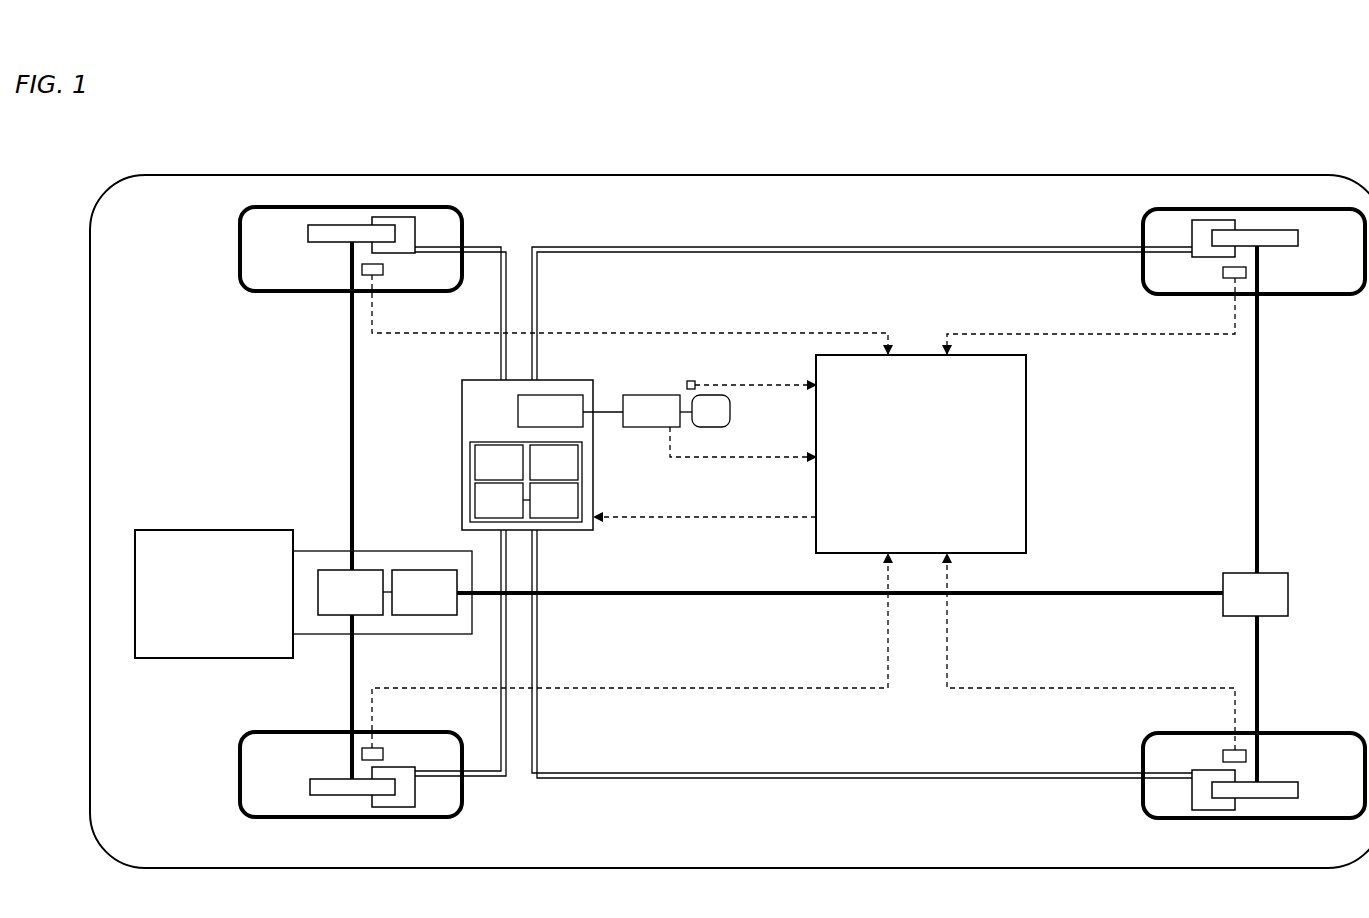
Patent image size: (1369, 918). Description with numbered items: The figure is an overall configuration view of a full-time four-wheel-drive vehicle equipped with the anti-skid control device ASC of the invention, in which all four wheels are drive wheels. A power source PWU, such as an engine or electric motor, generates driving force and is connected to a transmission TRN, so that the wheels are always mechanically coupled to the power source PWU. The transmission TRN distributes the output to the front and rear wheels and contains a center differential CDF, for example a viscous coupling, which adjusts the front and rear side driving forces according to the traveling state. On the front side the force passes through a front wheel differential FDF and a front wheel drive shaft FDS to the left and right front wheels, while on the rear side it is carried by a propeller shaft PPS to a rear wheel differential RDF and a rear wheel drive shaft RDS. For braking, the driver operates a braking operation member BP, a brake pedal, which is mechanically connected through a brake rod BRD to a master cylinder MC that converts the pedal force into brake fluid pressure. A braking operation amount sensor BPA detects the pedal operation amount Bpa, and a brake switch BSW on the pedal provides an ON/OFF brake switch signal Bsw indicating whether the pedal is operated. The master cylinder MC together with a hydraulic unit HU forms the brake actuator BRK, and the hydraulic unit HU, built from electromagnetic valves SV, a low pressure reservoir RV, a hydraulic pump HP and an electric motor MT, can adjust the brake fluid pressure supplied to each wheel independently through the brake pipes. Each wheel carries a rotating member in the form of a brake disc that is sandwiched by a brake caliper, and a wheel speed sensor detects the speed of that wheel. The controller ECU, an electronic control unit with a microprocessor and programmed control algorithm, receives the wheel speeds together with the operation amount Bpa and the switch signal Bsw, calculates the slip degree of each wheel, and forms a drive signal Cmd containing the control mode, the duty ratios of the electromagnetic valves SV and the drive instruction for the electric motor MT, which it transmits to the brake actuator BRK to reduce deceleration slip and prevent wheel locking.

The front wheel drive shaft FDS is at (352, 396).
The rear wheel drive shaft RDS is at (1257, 398).
The propeller shaft PPS is at (1066, 592).
The brake actuator BRK is at (475, 378).
The master cylinder MC is at (570, 411).
The hydraulic unit HU is at (515, 442).
The electromagnetic valve SV is at (499, 462).
The low pressure reservoir RV is at (554, 462).
The hydraulic pump HP is at (502, 500).
The electric motor MT is at (554, 500).
The braking operation amount sensor BPA is at (657, 411).
The braking operation member BP is at (711, 411).
The brake rod BRD is at (597, 415).
The brake switch BSW is at (687, 381).
The brake switch signal Bsw is at (755, 370).
The braking operation amount Bpa is at (743, 442).
The drive signal Cmd is at (705, 501).
The controller ECU is at (921, 454).
The anti-skid control device ASC is at (1058, 420).
The power source PWU is at (214, 594).
The transmission TRN is at (382, 552).
The front wheel differential FDF is at (355, 592).
The center differential CDF is at (424, 592).
The rear wheel differential RDF is at (1255, 594).